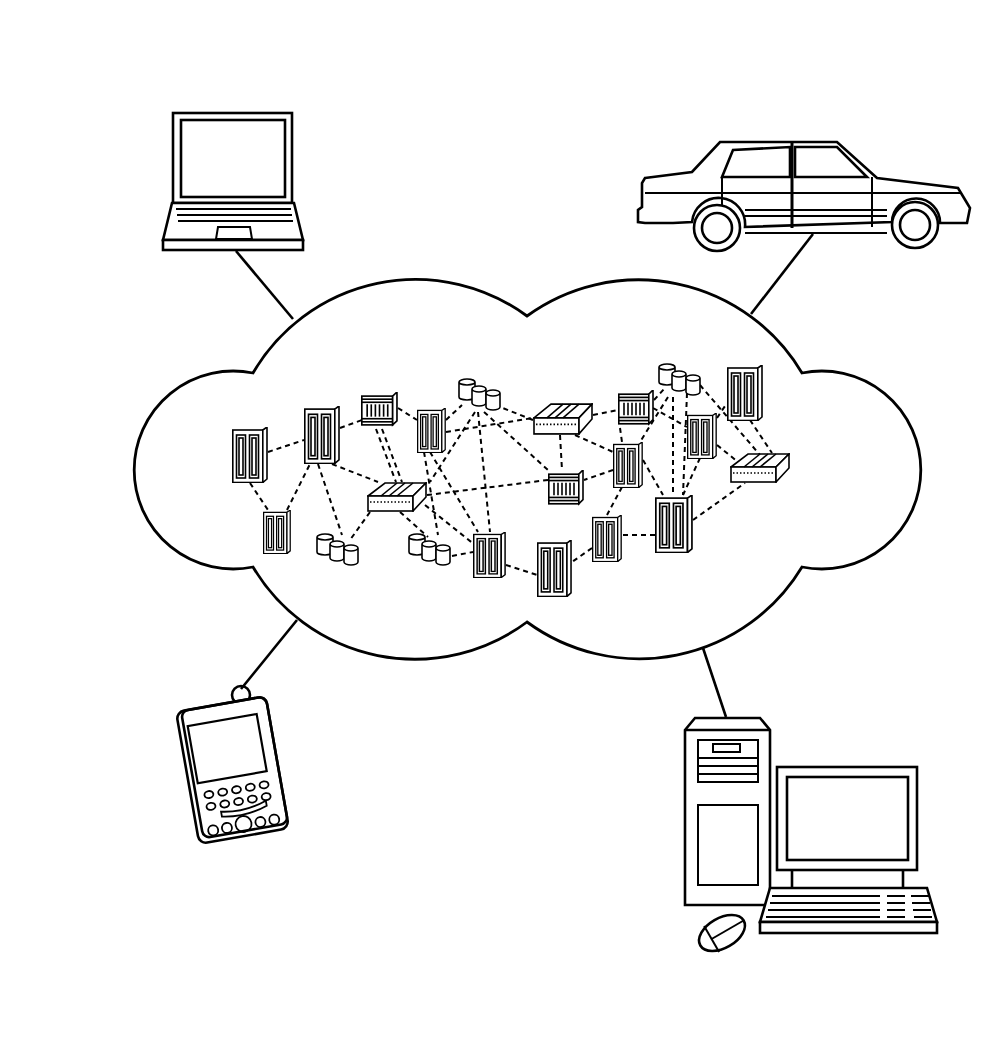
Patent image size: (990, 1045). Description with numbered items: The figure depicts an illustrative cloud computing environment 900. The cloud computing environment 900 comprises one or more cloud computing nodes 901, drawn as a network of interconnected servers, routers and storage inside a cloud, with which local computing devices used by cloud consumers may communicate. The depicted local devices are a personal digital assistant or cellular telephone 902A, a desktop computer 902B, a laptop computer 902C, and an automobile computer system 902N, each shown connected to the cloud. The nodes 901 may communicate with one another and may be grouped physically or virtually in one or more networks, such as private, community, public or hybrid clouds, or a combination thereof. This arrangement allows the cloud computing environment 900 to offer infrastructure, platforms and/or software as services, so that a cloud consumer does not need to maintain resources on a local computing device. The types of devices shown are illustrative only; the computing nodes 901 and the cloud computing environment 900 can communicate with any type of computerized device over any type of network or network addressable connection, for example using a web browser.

The cloud computing environment 900 is at (943, 103).
The cloud computing nodes 901 is at (803, 469).
The personal digital assistant (PDA) or cellular telephone 902A is at (212, 706).
The desktop computer 902B is at (849, 765).
The laptop computer 902C is at (233, 112).
The automobile computer system 902N is at (784, 141).